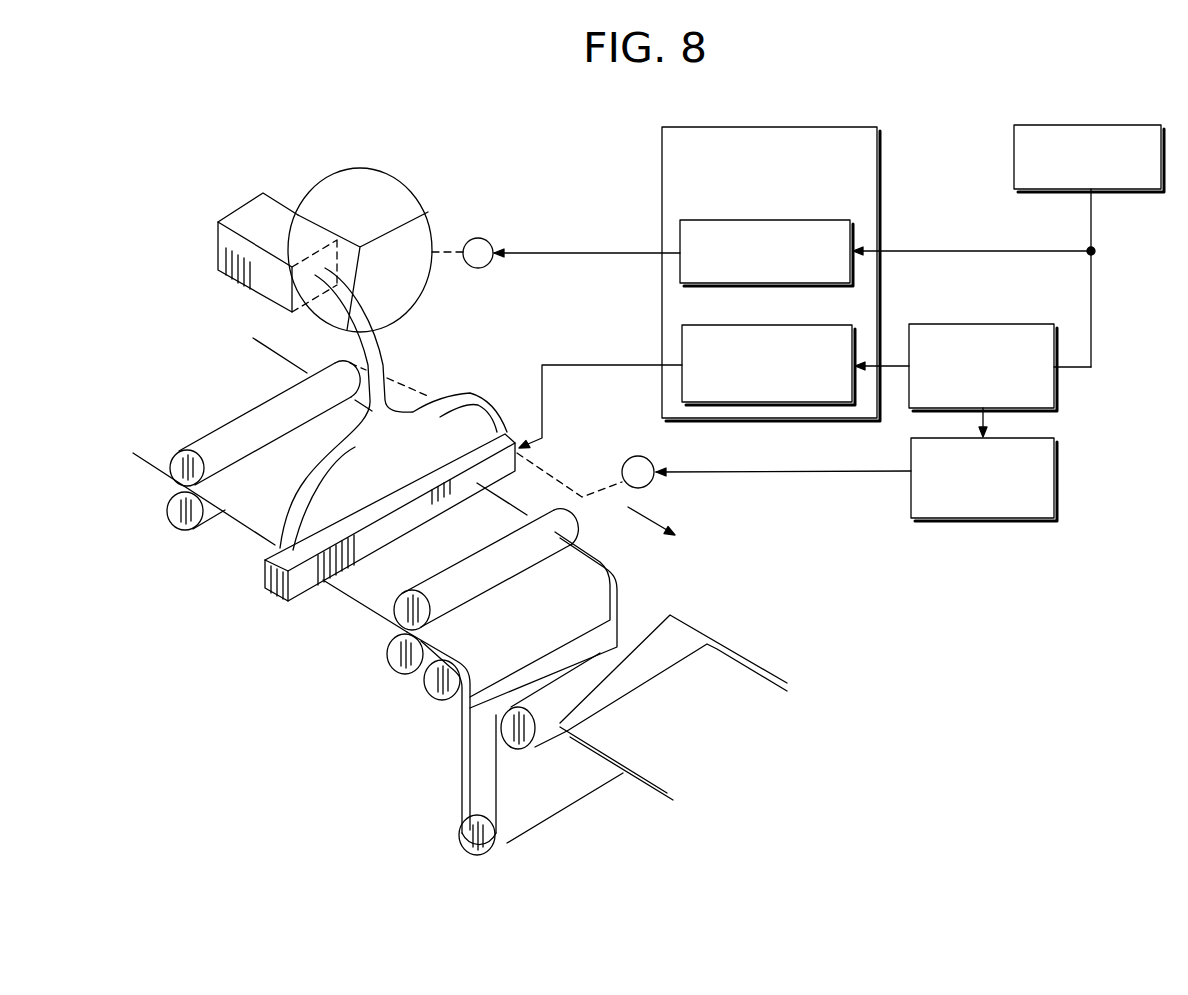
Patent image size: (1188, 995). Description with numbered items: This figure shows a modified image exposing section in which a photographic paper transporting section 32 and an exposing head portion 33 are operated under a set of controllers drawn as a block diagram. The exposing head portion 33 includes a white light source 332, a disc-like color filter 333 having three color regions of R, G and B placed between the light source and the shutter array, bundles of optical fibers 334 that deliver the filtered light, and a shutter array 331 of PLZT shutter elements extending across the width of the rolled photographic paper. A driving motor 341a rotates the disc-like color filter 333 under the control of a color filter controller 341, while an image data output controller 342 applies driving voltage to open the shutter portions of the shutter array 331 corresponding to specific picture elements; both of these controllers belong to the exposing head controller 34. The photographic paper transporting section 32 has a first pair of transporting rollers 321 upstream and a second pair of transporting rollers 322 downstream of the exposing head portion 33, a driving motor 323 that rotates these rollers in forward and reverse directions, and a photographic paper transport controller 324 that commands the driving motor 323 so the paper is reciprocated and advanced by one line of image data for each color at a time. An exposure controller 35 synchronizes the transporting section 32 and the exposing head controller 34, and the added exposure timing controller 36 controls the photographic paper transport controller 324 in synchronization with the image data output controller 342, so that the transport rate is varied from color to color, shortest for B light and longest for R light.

The photographic paper transporting section 32 is at (584, 478).
The exposing head portion 33 is at (363, 158).
The exposing head controller 34 is at (880, 142).
The exposure controller 35 is at (1089, 123).
The exposure timing controller 36 is at (998, 324).
The first pair of transporting rollers 321 is at (395, 670).
The second pair of transporting rollers 322 is at (175, 526).
The driving motor 323 is at (652, 484).
The photographic paper transport controller 324 is at (985, 520).
The shutter array 331 is at (267, 590).
The white light source 332 is at (253, 210).
The disc-like color filter 333 is at (412, 187).
The bundles of optical fibers 334 is at (387, 348).
The color filter controller 341 is at (680, 227).
The driving motor 341a is at (478, 238).
The image data output controller 342 is at (682, 340).